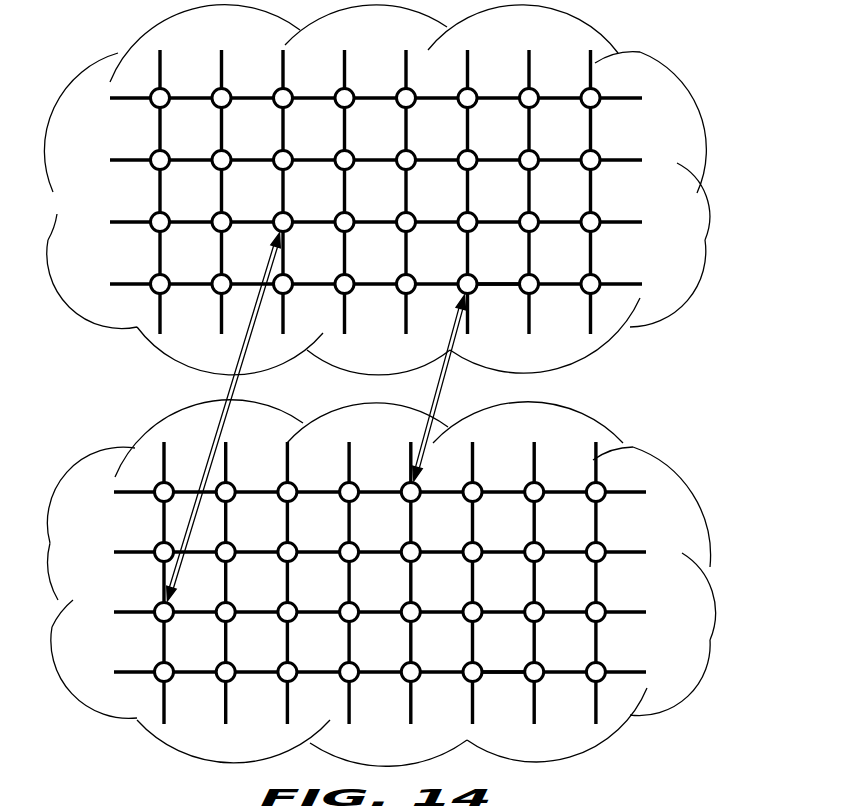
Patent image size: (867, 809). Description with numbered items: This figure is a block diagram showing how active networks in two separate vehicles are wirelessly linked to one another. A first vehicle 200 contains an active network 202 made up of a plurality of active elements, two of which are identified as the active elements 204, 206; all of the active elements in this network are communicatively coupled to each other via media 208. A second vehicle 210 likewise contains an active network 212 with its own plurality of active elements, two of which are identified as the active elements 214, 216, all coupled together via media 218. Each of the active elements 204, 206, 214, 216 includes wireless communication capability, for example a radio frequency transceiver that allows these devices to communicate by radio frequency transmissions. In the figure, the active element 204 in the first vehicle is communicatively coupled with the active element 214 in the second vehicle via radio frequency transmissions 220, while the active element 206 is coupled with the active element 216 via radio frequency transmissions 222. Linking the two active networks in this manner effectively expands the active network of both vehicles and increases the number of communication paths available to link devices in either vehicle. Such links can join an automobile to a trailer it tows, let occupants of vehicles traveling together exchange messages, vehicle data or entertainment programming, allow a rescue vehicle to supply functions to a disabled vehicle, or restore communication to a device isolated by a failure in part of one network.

The first vehicle 200 is at (704, 262).
The active network 202 is at (660, 292).
The active element 204 is at (462, 276).
The active element 206 is at (278, 213).
The media 208 is at (498, 277).
The second vehicle 210 is at (709, 649).
The active network 212 is at (663, 682).
The active element 214 is at (404, 485).
The active element 216 is at (157, 604).
The media 218 is at (505, 668).
The radio frequency transmissions 220 is at (444, 379).
The radio frequency transmissions 222 is at (239, 377).